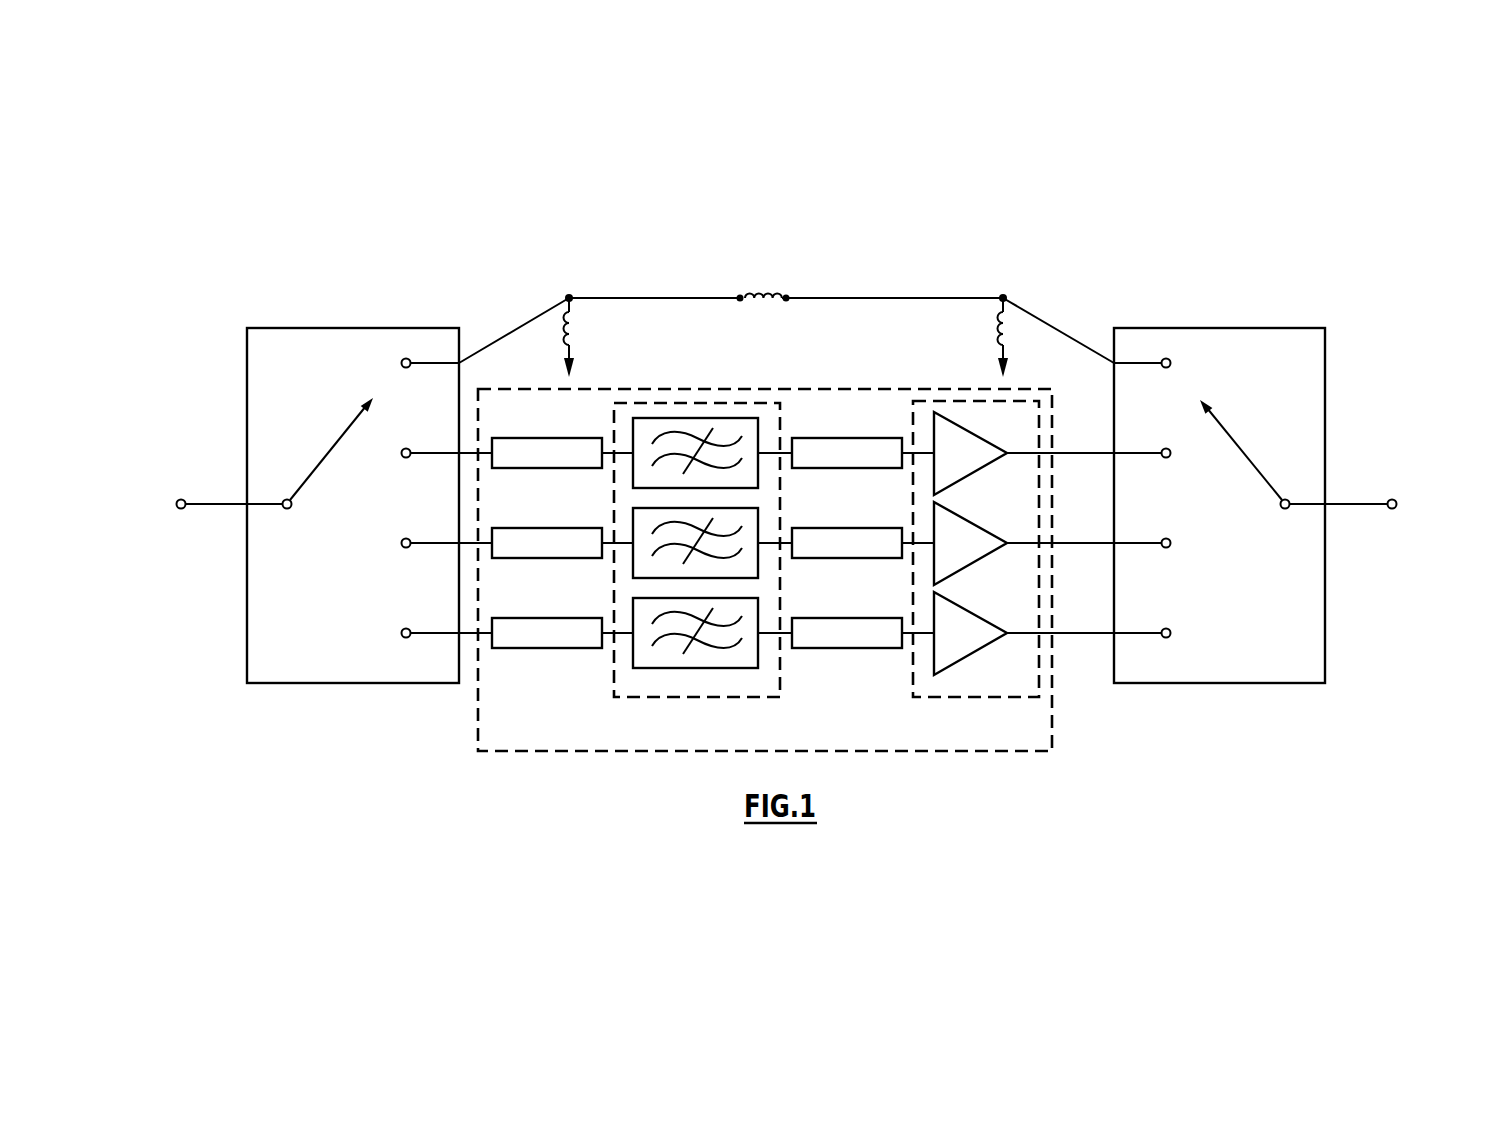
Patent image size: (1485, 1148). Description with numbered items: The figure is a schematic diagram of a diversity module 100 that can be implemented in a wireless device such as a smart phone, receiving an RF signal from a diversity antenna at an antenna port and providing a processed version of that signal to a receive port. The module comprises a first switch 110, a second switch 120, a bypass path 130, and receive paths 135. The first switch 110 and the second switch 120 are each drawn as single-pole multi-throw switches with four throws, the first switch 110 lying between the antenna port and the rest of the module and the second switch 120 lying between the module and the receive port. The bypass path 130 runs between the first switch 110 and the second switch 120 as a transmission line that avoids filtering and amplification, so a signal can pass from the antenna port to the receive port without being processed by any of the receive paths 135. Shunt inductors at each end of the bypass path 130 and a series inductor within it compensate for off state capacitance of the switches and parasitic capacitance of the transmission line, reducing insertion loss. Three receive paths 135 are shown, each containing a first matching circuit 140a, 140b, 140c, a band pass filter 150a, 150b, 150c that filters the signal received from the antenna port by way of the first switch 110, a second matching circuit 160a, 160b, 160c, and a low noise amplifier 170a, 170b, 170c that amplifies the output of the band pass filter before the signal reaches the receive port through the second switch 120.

The diversity module 100 is at (240, 265).
The first switch 110 is at (340, 328).
The second switch 120 is at (1207, 328).
The bypass path 130 is at (923, 298).
The receive paths 135 is at (843, 389).
The first matching circuit 140a is at (527, 438).
The first matching circuit 140b is at (527, 528).
The first matching circuit 140c is at (527, 618).
The band pass filter 150a is at (683, 418).
The band pass filter 150b is at (758, 518).
The band pass filter 150c is at (758, 609).
The second matching circuit 160a is at (842, 438).
The second matching circuit 160b is at (842, 528).
The second matching circuit 160c is at (842, 618).
The low noise amplifier 170a is at (968, 431).
The low noise amplifier 170b is at (968, 521).
The low noise amplifier 170c is at (968, 611).